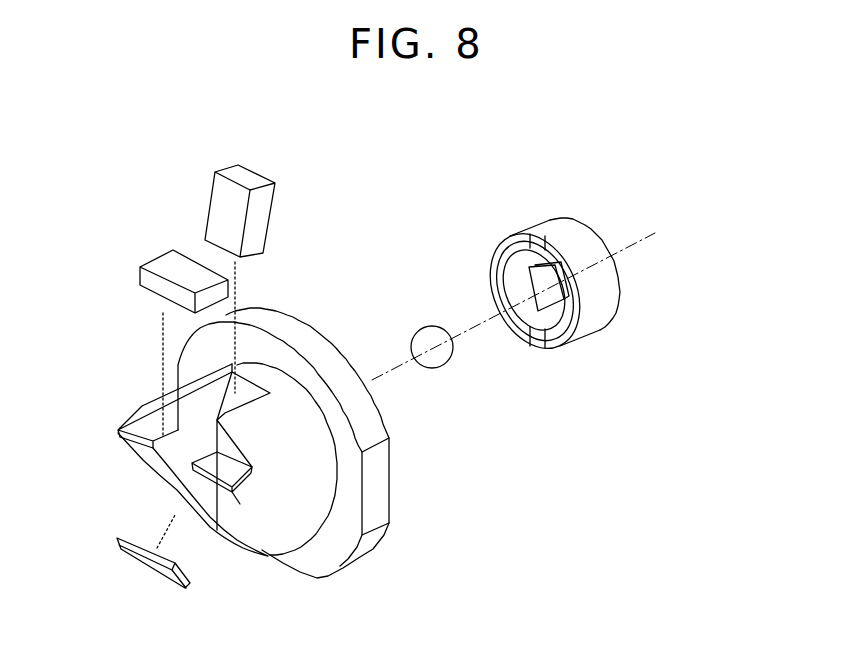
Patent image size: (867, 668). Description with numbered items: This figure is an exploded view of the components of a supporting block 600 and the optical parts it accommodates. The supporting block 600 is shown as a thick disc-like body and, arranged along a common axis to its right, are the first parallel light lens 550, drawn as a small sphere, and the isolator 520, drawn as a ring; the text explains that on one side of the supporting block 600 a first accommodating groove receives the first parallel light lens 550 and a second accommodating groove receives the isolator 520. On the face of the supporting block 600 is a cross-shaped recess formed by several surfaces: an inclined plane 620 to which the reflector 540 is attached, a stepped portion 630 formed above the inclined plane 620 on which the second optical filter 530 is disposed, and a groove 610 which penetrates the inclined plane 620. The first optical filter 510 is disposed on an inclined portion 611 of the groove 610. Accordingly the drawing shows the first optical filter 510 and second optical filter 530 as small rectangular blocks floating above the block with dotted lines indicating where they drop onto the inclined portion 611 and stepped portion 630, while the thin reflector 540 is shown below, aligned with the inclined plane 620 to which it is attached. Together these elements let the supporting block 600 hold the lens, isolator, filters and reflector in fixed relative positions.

The first optical filter 510 is at (252, 177).
The second optical filter 530 is at (163, 265).
The reflector 540 is at (104, 565).
The isolator 520 is at (650, 288).
The first parallel light lens 550 is at (470, 358).
The supporting block 600 is at (420, 497).
The groove 610 is at (148, 495).
The inclined portion 611 is at (247, 390).
The inclined plane 620 is at (148, 465).
The stepped portion 630 is at (120, 435).